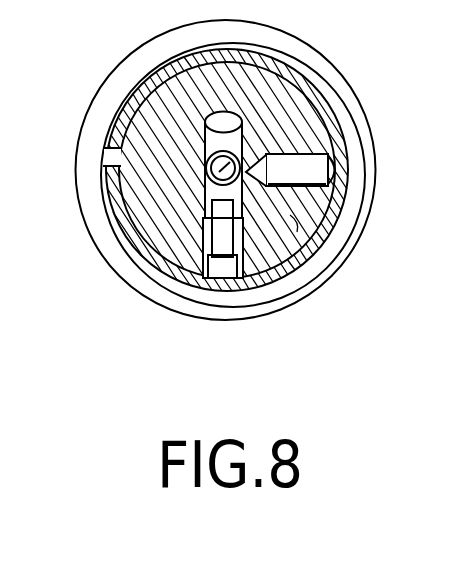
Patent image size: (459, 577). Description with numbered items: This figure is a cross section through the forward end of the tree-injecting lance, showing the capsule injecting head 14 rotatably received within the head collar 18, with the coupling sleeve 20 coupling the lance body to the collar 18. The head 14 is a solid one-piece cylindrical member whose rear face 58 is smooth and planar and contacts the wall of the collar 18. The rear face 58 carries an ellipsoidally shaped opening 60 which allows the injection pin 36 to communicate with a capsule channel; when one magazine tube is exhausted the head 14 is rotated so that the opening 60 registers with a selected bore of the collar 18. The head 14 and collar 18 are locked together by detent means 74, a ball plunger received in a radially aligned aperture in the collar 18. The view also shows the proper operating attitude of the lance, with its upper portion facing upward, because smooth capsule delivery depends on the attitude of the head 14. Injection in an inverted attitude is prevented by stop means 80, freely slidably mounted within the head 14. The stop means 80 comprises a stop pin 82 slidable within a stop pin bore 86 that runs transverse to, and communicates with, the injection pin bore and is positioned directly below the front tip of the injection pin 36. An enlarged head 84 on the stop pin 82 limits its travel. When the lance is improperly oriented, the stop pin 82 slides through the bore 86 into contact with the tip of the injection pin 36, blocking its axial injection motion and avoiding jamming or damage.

The capsule injecting head 14 is at (120, 128).
The head collar 18 is at (203, 267).
The coupling sleeve 20 is at (232, 322).
The injection pin 36 is at (210, 173).
The rear face 58 is at (293, 222).
The ellipsoidally shaped opening 60 is at (215, 138).
The detent means 74 is at (343, 173).
The stop means 80 is at (227, 225).
The stop pin 82 is at (223, 243).
The enlarged head 84 is at (232, 265).
The stop pin bore 86 is at (245, 235).